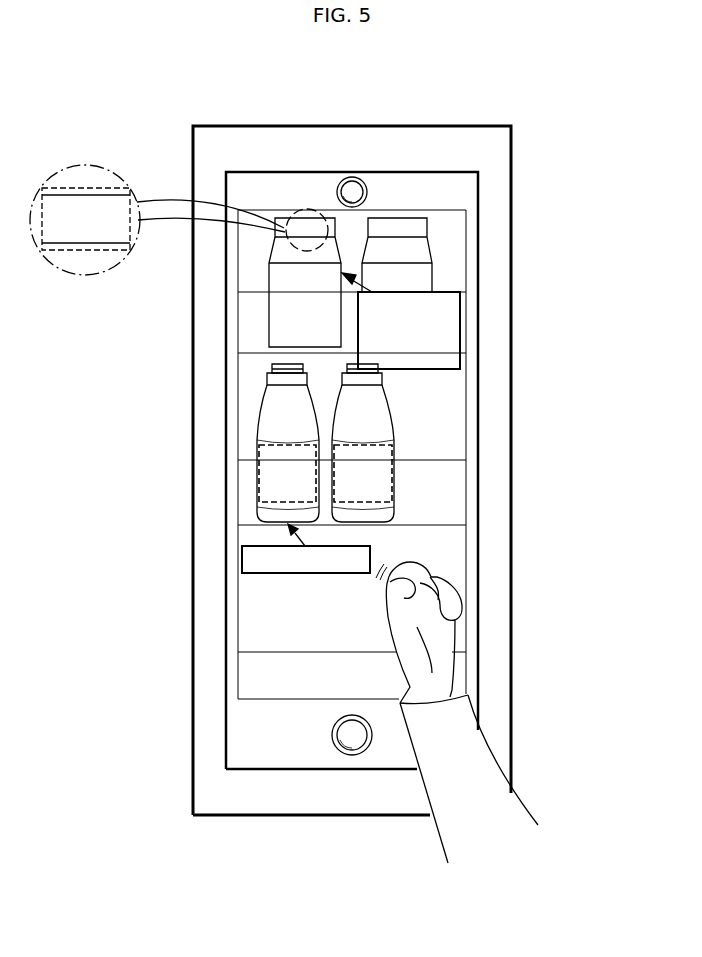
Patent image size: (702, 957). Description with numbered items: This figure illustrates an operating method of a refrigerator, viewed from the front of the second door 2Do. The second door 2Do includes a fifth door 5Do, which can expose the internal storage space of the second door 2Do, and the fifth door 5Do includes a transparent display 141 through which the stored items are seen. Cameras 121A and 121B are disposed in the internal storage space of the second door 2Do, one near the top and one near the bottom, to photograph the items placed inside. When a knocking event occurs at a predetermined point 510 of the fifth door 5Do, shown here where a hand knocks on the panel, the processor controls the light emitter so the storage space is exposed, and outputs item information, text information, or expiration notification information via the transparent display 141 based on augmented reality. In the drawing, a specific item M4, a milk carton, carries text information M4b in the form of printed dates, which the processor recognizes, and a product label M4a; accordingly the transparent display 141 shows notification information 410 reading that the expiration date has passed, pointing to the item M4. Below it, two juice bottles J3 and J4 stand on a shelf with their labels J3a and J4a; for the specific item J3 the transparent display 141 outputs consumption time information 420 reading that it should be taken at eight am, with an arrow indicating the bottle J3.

The second door 2Do is at (278, 126).
The fifth door 5Do is at (448, 188).
The camera 121A is at (363, 183).
The camera 121B is at (350, 755).
The transparent display 141 is at (437, 545).
The notification information 410 is at (449, 292).
The consumption time information 420 is at (259, 573).
The predetermined point 510 is at (383, 578).
The specific item M4 is at (220, 284).
The milk product name label M4a is at (240, 340).
The text information M4b is at (83, 188).
The specific item J3 is at (213, 443).
The apple juice label J3a is at (257, 475).
The grape juice bottle J4 is at (457, 443).
The grape juice label J4a is at (392, 473).